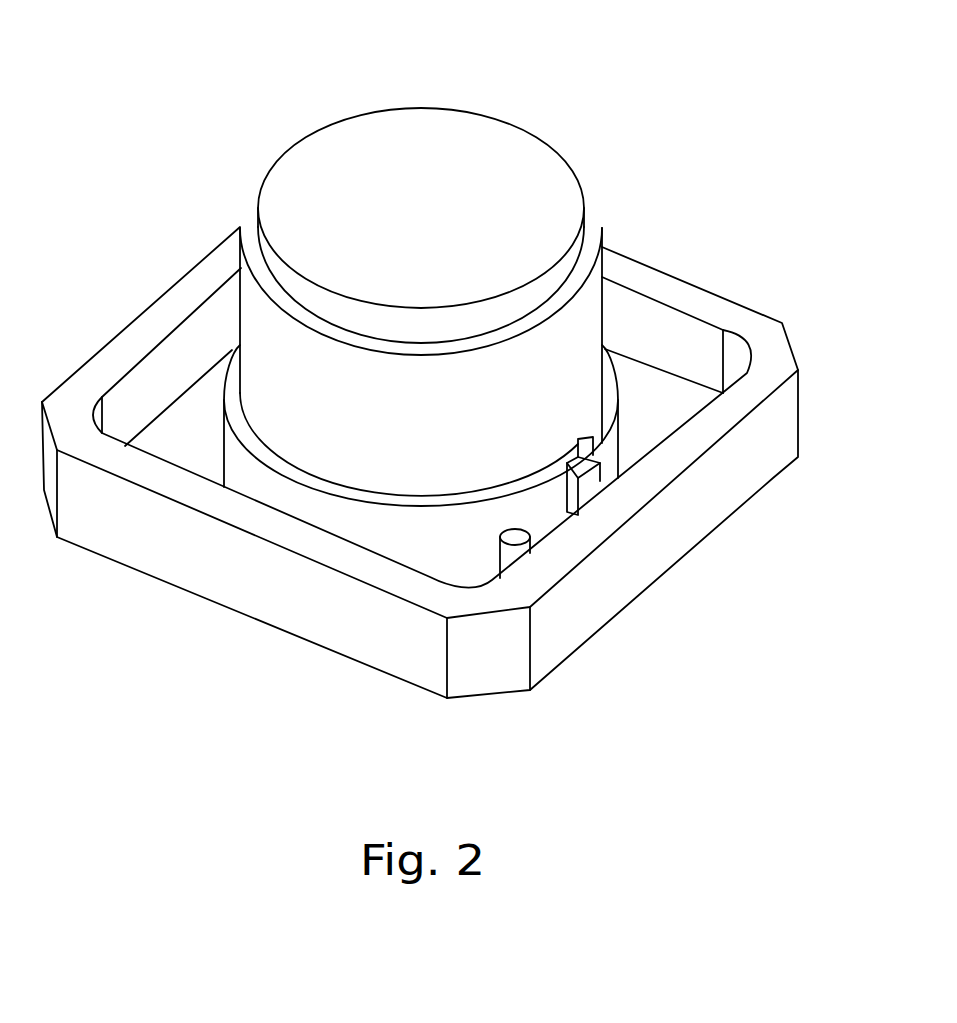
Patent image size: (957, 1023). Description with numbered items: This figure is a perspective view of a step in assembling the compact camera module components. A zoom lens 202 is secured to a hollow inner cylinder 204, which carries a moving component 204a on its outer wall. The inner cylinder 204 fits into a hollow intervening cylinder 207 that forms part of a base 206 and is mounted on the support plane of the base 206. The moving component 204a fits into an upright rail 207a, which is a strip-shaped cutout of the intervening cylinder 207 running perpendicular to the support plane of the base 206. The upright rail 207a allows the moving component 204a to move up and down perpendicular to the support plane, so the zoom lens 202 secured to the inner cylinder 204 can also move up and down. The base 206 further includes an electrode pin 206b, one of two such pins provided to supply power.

The zoom lens 202 is at (437, 193).
The inner cylinder 204 is at (593, 233).
The moving component 204a is at (592, 488).
The base 206 is at (235, 567).
The electrode pin 206b is at (512, 557).
The intervening cylinder 207 is at (610, 392).
The upright rail 207a is at (567, 451).